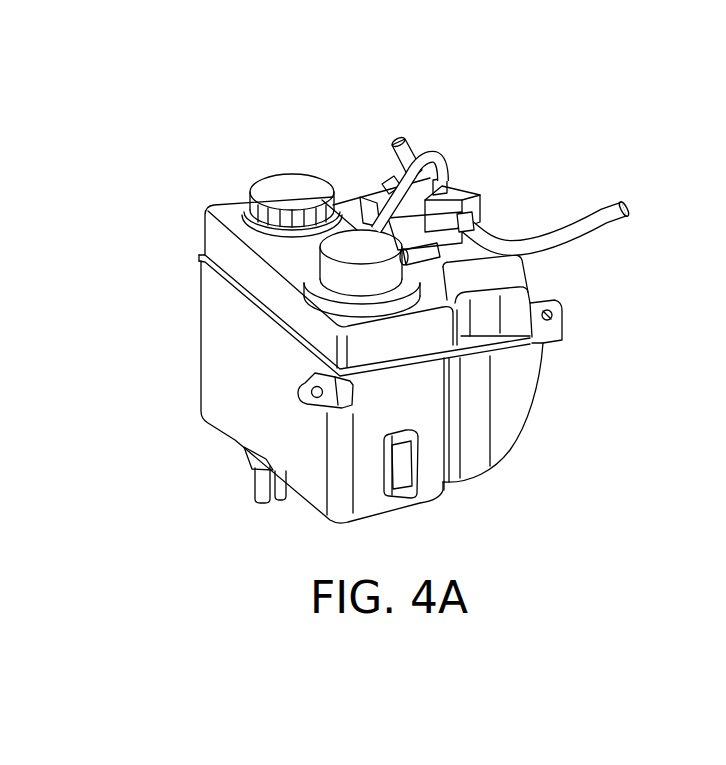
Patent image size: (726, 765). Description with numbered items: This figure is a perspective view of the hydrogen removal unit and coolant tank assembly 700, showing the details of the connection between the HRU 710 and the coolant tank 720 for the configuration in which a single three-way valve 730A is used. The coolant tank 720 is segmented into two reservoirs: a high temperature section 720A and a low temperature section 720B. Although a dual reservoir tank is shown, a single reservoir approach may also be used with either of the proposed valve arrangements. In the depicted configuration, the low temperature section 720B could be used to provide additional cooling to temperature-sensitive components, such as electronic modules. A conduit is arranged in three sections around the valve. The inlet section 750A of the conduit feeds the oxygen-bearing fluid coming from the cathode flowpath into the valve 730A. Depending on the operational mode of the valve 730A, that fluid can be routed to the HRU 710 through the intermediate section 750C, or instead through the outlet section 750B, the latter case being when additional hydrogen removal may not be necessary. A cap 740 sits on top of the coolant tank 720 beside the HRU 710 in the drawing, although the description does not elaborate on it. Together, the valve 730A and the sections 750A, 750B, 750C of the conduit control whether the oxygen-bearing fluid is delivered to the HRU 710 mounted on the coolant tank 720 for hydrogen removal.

The hydrogen removal unit and coolant tank assembly 700 is at (308, 59).
The HRU 710 is at (347, 277).
The coolant tank 720 is at (205, 333).
The high temperature section 720A is at (228, 427).
The low temperature section 720B is at (503, 443).
The three-way valve 730A is at (467, 198).
The filler cap 740 is at (264, 185).
The inlet section 750A is at (393, 145).
The outlet section 750B is at (592, 232).
The intermediate section 750C is at (438, 157).